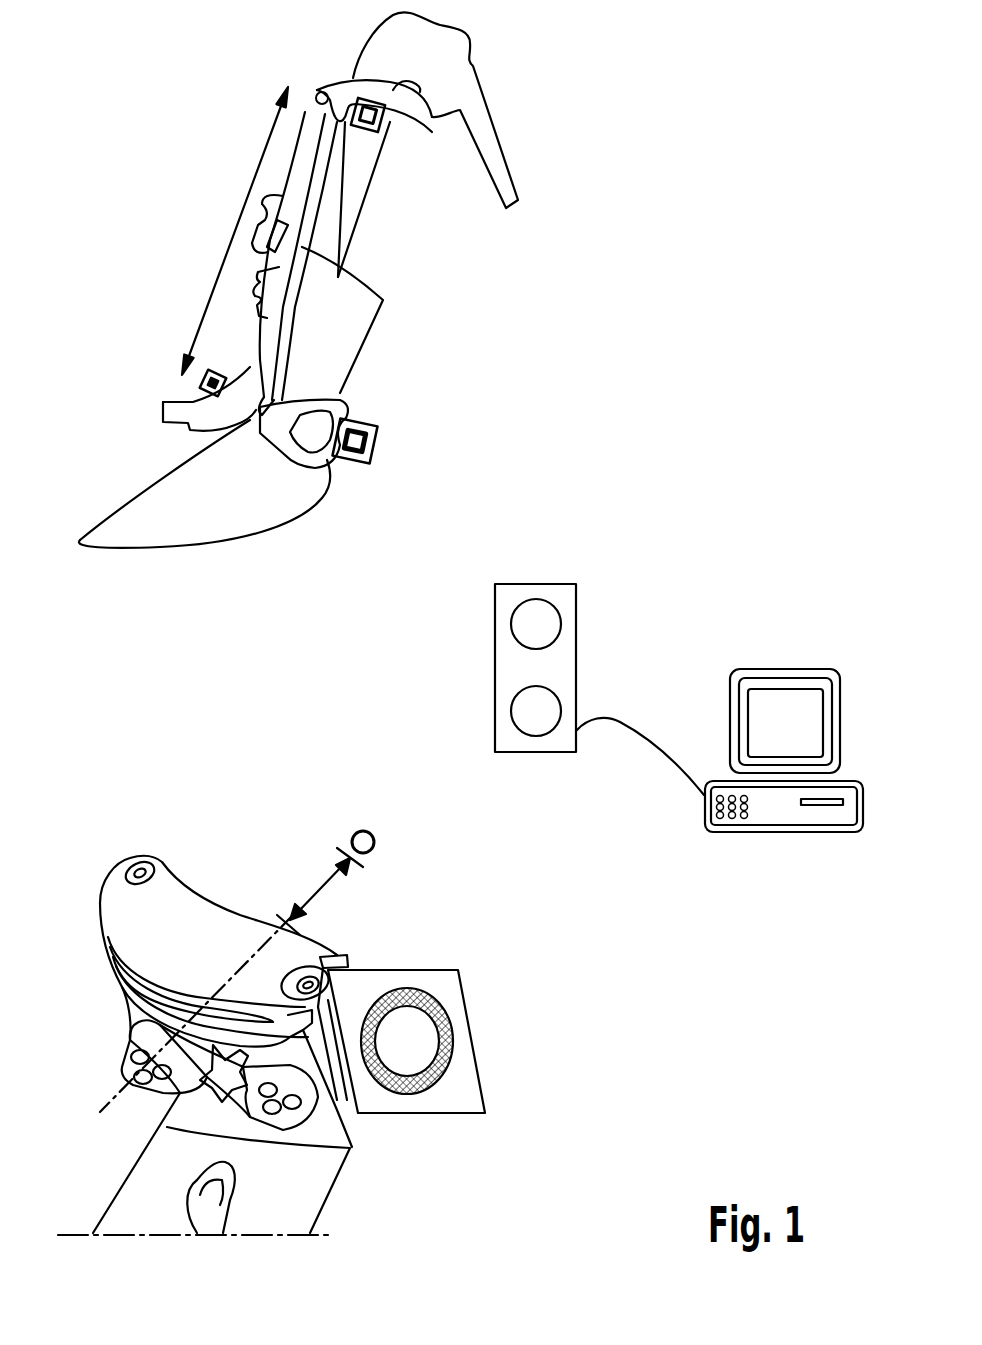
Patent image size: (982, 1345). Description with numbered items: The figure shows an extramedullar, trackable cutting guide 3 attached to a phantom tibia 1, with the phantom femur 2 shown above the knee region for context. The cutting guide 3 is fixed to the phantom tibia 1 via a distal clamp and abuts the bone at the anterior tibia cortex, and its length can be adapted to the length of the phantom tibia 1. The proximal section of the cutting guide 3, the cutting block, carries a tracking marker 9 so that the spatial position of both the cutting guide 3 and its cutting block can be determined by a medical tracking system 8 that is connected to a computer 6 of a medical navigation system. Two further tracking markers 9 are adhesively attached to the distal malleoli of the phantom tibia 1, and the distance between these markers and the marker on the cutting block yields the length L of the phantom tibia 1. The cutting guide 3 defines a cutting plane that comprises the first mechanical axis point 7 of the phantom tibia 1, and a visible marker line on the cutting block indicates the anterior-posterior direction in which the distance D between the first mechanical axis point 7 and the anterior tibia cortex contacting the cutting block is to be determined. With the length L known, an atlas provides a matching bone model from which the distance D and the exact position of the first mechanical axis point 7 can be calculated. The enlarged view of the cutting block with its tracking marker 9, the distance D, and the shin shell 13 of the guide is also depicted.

The phantom tibia 1 is at (397, 127).
The leg (femur) 2 is at (480, 115).
The extramedullar cutting guide 3 is at (315, 132).
The computer 6 is at (792, 666).
The first mechanical axis point 7 is at (378, 824).
The medical tracking system 8 is at (546, 582).
The tracking marker 9 is at (217, 374).
The shin shell 13 is at (347, 330).
The length of the phantom tibia L is at (227, 247).
The distance D is at (317, 888).